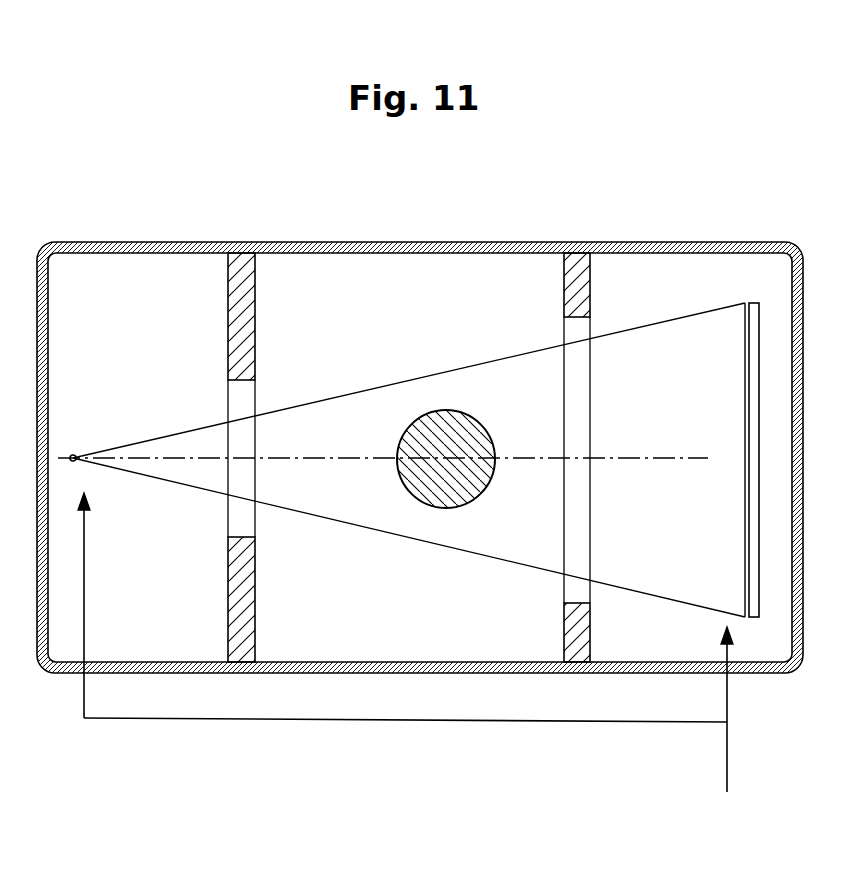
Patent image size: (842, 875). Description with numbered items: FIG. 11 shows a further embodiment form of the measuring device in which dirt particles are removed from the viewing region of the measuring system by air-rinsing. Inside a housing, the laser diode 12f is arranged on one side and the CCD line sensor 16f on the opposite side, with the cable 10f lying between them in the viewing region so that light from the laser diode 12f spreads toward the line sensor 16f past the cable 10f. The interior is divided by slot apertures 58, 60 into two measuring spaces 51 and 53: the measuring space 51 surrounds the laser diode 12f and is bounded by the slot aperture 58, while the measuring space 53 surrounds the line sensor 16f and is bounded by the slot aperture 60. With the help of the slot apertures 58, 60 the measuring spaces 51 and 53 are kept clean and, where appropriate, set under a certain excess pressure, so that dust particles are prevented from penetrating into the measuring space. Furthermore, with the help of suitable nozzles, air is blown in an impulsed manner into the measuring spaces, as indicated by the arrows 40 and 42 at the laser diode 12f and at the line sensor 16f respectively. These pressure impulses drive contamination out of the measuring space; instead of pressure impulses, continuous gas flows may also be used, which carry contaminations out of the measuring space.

The measuring space 51 is at (127, 278).
The measuring space 53 is at (660, 276).
The slot aperture 58 is at (252, 300).
The slot aperture 60 is at (566, 290).
The CCD line sensor 16f is at (746, 407).
The cable 10f is at (470, 432).
The laser diode 12f is at (73, 453).
The arrow 40 is at (92, 503).
The arrow 42 is at (718, 633).